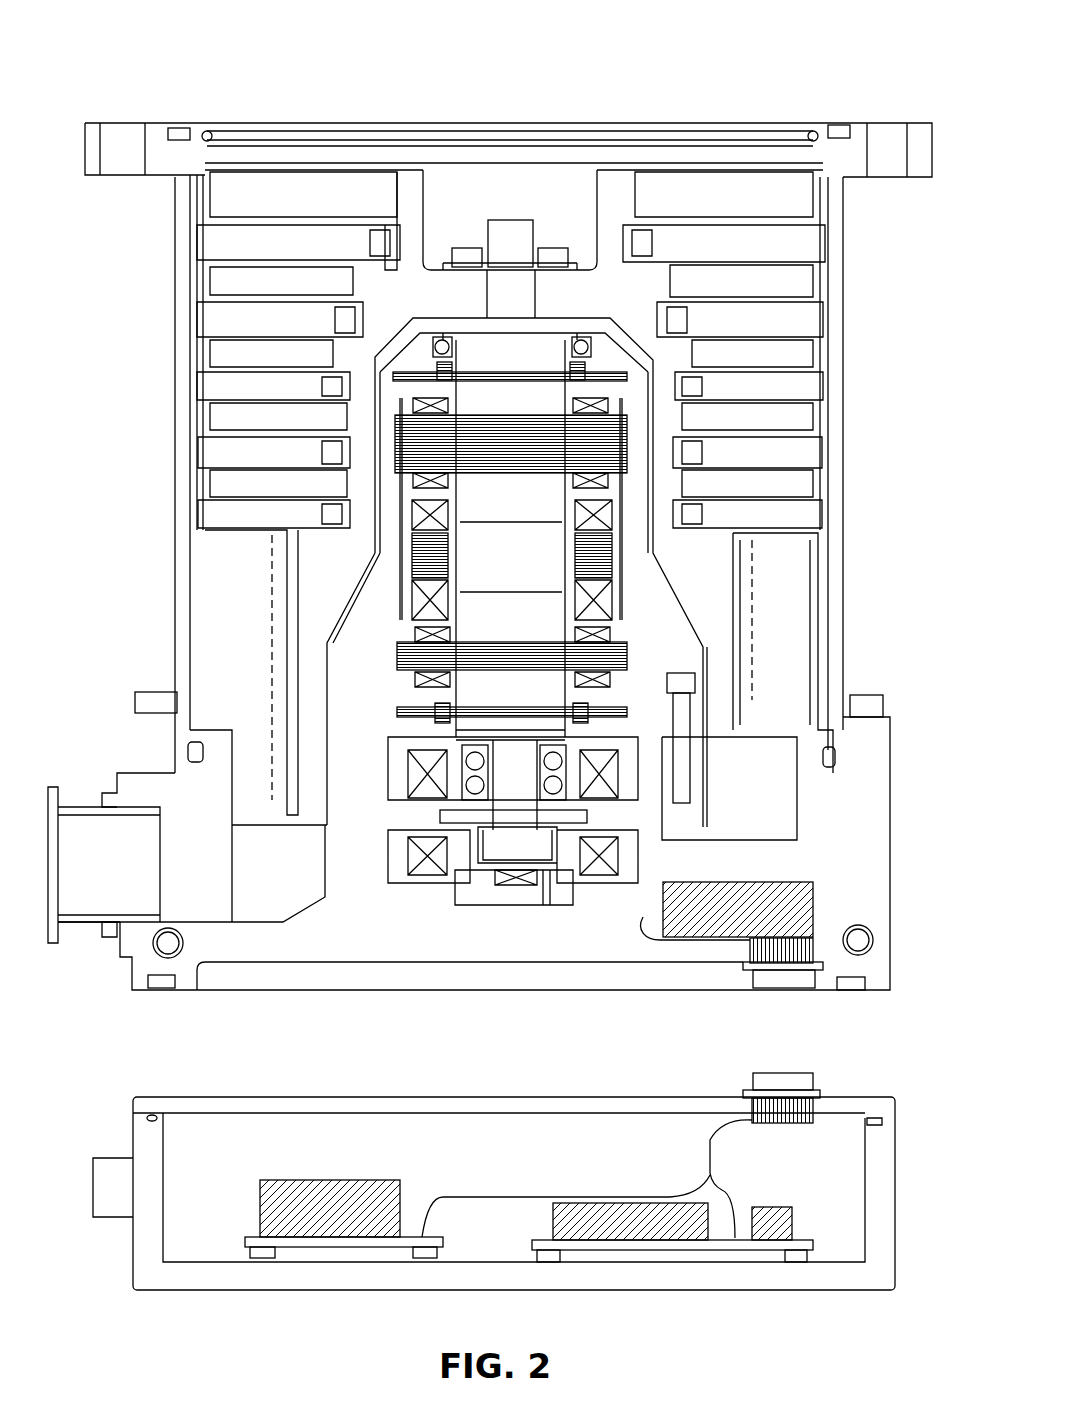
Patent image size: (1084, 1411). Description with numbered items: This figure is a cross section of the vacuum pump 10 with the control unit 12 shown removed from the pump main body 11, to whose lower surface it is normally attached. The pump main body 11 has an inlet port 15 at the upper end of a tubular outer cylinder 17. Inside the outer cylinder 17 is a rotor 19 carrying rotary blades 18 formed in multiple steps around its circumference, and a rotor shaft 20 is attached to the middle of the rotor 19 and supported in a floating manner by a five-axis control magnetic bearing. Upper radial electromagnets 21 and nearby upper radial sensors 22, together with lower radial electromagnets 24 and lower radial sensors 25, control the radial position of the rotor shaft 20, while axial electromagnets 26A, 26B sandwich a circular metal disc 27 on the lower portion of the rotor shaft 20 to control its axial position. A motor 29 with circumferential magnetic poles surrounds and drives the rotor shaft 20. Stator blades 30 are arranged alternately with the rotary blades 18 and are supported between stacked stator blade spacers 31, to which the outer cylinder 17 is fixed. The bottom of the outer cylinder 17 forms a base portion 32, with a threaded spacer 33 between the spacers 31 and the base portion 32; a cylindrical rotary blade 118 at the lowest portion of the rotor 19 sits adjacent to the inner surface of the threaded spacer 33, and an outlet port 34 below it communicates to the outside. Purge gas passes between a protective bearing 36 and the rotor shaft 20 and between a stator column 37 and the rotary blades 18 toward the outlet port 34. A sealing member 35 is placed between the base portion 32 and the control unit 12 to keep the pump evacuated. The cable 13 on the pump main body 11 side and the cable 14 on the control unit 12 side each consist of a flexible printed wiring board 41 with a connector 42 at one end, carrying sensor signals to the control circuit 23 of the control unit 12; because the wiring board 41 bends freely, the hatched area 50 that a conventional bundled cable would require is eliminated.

The vacuum pump 10 is at (526, 78).
The pump main body 11 is at (853, 224).
The control unit 12 is at (906, 1212).
The cable 13 is at (655, 949).
The cable 14 is at (698, 1144).
The inlet port 15 is at (558, 185).
The outer cylinder 17 is at (834, 375).
The rotary blades 18 is at (215, 485).
The rotor 19 is at (436, 204).
The rotor shaft 20 is at (627, 495).
The upper radial electromagnets 21 is at (640, 466).
The upper radial sensors 22 is at (584, 368).
The control circuit 23 is at (626, 1264).
The lower radial electromagnets 24 is at (630, 650).
The lower radial sensors 25 is at (663, 693).
The axial electromagnet 26A is at (627, 788).
The axial electromagnet 26B is at (633, 873).
The metal disc 27 is at (638, 813).
The motor 29 is at (625, 540).
The stator blades 30 is at (205, 514).
The stator blade spacers 31 is at (192, 492).
The base portion 32 is at (869, 905).
The threaded spacer 33 is at (795, 563).
The outlet port 34 is at (62, 860).
The sealing member 35 is at (853, 990).
The protective bearing 36 is at (470, 750).
The stator column 37 is at (647, 602).
The flexible printed wiring board 41 is at (723, 1127).
The connector 42 is at (805, 1083).
The hatched area 50 is at (826, 915).
The rotary blade 118 is at (717, 745).